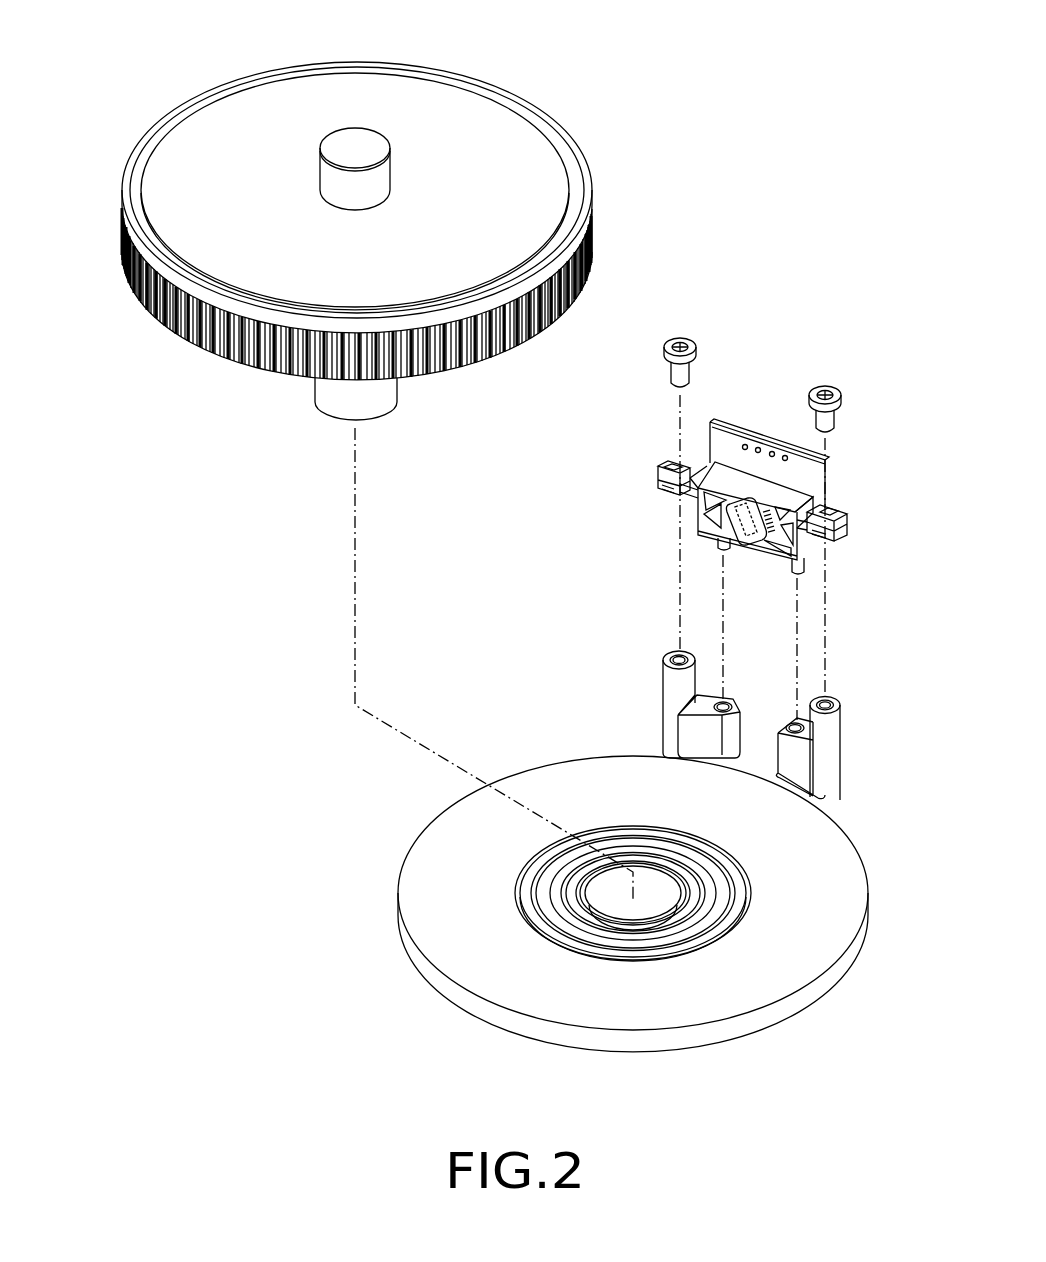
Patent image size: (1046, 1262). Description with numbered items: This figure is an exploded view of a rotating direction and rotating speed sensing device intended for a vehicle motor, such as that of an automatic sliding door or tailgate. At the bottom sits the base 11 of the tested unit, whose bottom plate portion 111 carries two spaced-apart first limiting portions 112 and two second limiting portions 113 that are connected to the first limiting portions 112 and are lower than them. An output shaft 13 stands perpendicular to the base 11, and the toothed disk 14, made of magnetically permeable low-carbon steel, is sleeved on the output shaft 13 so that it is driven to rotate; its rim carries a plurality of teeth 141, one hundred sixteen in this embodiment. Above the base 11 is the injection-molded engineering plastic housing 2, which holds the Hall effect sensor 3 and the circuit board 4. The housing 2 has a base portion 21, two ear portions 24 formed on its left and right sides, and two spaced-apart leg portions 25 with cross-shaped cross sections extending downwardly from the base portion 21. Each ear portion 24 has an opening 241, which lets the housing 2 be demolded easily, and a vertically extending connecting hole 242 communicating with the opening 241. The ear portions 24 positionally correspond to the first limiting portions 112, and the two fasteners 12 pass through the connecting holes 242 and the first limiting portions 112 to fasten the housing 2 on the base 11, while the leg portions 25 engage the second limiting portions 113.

The housing 2 is at (769, 483).
The Hall effect sensor 3 is at (740, 542).
The circuit board 4 is at (800, 460).
The base 11 is at (667, 851).
The fasteners 12 is at (688, 341).
The output shaft 13 is at (373, 383).
The toothed disk 14 is at (440, 107).
The base portion 21 is at (751, 484).
The ear portions 24 is at (769, 479).
The leg portions 25 is at (720, 548).
The bottom plate portion 111 is at (850, 902).
The first limiting portions 112 is at (662, 694).
The second limiting portions 113 is at (778, 730).
The teeth 141 is at (100, 300).
The opening 241 is at (665, 491).
The connecting hole 242 is at (671, 463).